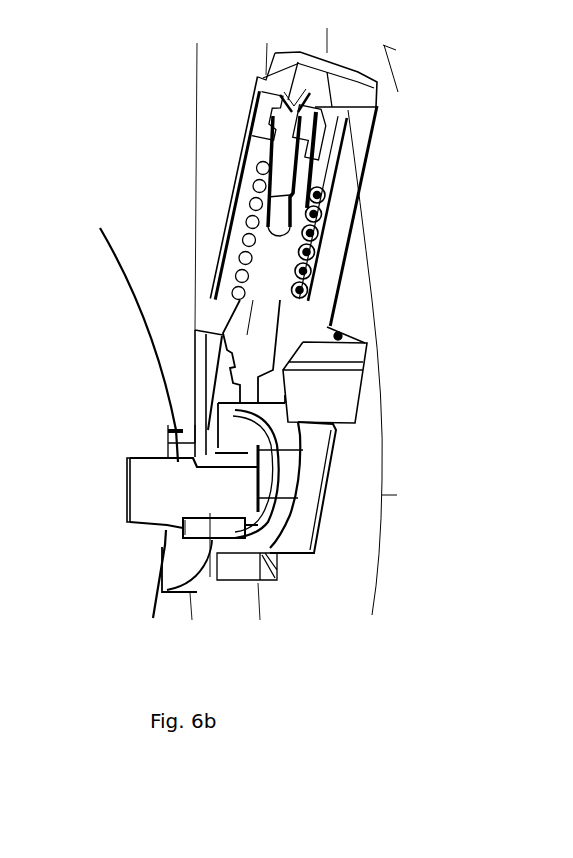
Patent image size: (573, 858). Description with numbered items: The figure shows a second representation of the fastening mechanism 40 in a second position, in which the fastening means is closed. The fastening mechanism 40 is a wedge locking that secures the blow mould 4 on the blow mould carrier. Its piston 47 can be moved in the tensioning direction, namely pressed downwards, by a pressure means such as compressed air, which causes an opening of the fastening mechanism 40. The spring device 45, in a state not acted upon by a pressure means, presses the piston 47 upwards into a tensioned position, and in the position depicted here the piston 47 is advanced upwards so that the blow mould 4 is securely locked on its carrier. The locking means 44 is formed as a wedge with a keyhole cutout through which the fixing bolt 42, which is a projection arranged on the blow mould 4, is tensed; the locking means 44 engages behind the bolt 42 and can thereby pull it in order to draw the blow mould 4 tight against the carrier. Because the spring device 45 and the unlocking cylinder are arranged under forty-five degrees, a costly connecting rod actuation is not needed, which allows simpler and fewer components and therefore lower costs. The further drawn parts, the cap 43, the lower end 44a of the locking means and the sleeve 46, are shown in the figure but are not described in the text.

The fastening mechanism 40 is at (75, 272).
The bolt 42 is at (192, 482).
The actuator cap 43 is at (280, 77).
The locking means 44 is at (215, 398).
The piston lower end 44a is at (215, 532).
The spring device 45 is at (257, 203).
The sleeve 46 is at (210, 352).
The piston 47 is at (282, 112).
The blow mould 4 is at (175, 577).